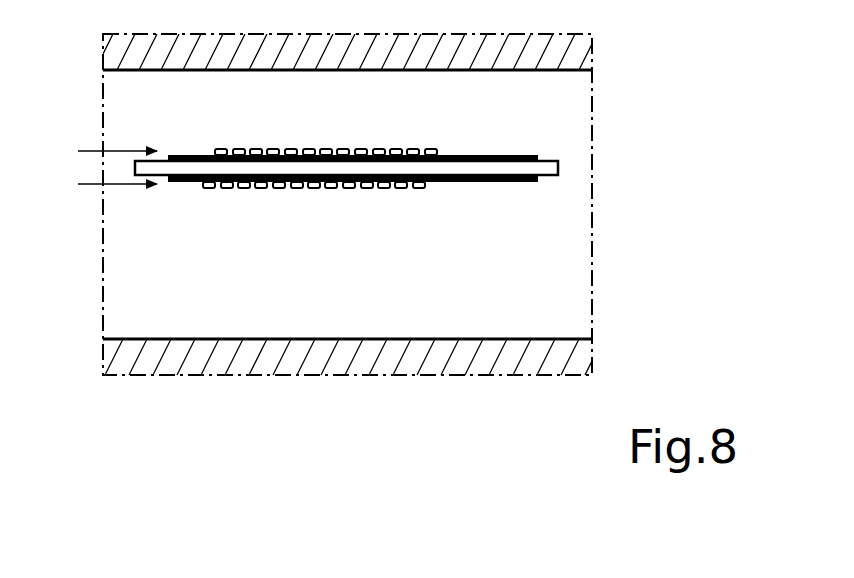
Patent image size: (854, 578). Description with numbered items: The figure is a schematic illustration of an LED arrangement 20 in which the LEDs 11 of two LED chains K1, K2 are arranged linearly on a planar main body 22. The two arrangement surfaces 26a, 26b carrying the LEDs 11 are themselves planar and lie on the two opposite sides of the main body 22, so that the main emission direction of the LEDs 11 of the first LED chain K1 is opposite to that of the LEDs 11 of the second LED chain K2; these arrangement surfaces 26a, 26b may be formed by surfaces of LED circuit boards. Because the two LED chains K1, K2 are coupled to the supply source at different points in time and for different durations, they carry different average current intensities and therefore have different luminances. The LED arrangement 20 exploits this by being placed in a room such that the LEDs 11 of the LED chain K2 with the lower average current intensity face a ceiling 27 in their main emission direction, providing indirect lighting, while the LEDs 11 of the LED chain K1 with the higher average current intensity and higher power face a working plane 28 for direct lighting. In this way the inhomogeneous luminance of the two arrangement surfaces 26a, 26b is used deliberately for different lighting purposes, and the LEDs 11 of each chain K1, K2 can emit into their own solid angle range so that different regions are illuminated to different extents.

The LED arrangement 20 is at (95, 90).
The LEDs 11 is at (355, 149).
The planar main body 22 is at (558, 163).
The arrangement surface 26a is at (455, 183).
The arrangement surface 26b is at (470, 155).
The ceiling 27 is at (571, 72).
The working plane 28 is at (497, 338).
The first LED chain K1 is at (97, 184).
The second LED chain K2 is at (97, 151).